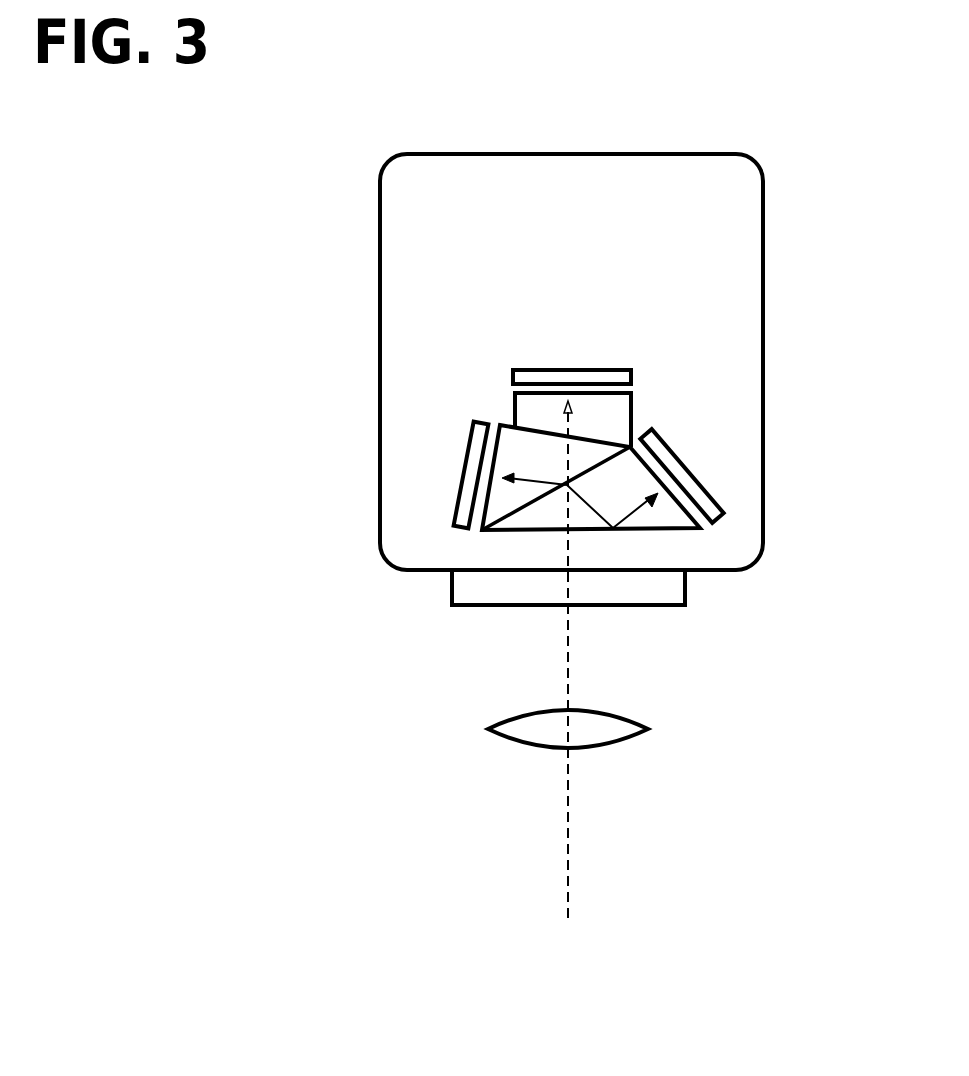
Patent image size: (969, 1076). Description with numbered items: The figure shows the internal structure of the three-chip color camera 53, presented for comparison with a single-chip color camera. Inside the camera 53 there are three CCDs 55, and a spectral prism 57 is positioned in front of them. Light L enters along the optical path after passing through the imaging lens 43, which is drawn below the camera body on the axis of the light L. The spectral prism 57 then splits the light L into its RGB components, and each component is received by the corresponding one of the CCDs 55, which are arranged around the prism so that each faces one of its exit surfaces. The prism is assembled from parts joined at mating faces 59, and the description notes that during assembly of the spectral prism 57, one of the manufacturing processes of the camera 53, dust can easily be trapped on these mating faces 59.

The three-chip color camera 53 is at (380, 296).
The CCDs 55 is at (575, 370).
The spectral prism 57 is at (676, 532).
The mating faces 59 is at (590, 437).
The imaging lens 43 is at (488, 729).
The light L is at (570, 852).